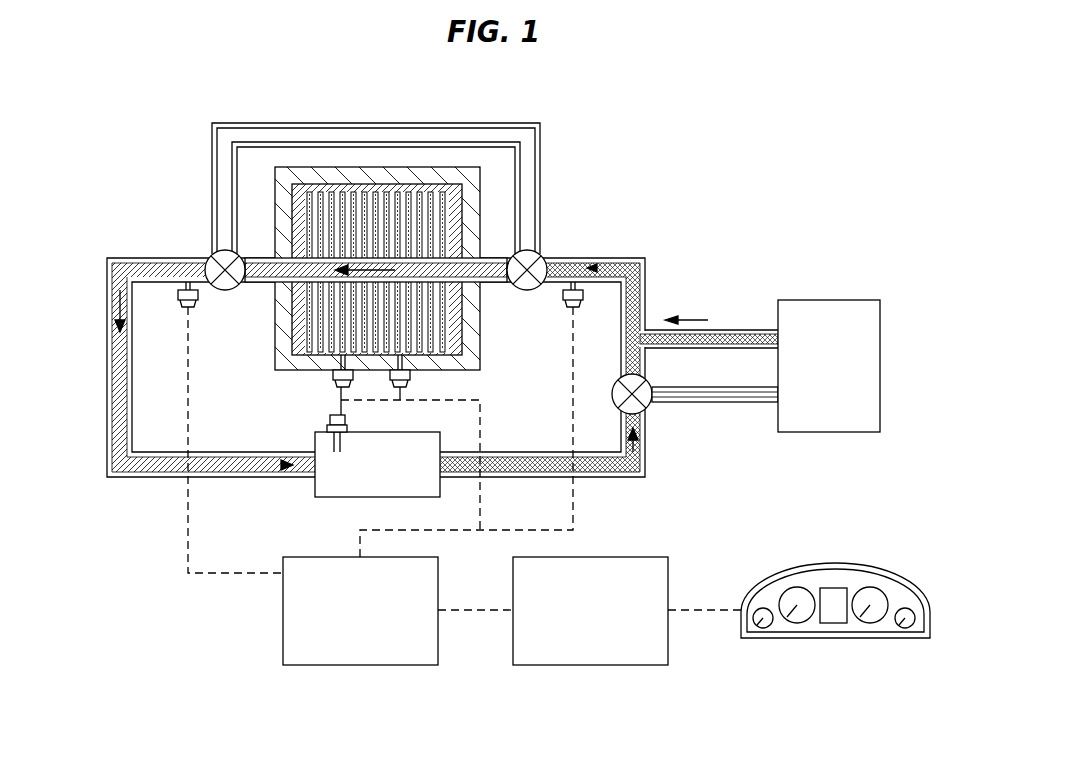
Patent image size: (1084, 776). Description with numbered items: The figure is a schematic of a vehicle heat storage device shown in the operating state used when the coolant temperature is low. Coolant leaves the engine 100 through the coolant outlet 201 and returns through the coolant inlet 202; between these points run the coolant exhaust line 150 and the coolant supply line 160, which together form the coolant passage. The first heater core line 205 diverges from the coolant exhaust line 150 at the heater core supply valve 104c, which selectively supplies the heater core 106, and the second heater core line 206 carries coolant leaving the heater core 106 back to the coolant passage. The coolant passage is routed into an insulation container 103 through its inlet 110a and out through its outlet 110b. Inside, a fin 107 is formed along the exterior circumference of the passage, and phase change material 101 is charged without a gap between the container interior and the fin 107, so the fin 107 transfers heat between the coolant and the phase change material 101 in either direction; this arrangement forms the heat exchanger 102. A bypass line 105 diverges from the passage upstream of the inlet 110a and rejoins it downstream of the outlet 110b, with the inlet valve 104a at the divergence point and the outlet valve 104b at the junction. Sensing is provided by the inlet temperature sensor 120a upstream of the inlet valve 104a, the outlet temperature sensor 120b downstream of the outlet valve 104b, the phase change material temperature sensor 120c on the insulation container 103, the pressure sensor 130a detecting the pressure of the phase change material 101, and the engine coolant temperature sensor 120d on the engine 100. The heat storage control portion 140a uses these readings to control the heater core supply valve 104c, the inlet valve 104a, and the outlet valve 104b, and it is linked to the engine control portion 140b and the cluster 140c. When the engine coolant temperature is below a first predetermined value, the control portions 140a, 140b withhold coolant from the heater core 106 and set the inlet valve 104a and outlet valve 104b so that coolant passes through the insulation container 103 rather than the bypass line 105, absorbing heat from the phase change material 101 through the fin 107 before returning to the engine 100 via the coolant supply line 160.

The engine 100 is at (372, 497).
The phase change material 101 is at (374, 227).
The heat exchanger 102 is at (466, 315).
The insulation container 103 is at (475, 362).
The inlet valve 104a is at (541, 256).
The outlet valve 104b is at (212, 256).
The heater core supply valve 104c is at (647, 408).
The bypass line 105 is at (326, 123).
The heater core 106 is at (829, 300).
The fin 107 is at (397, 184).
The inlet 110a is at (482, 257).
The outlet 110b is at (268, 257).
The inlet temperature sensor 120a is at (590, 293).
The outlet temperature sensor 120b is at (198, 300).
The phase change material temperature sensor 120c is at (333, 375).
The engine coolant temperature sensor 120d is at (328, 420).
The pressure sensor 130a is at (408, 374).
The heat storage control portion 140a is at (360, 665).
The engine control portion 140b is at (590, 665).
The cluster 140c is at (833, 638).
The coolant exhaust line 150 is at (636, 477).
The coolant supply line 160 is at (108, 463).
The coolant outlet 201 is at (448, 477).
The coolant inlet 202 is at (308, 477).
The first heater core line 205 is at (758, 402).
The second heater core line 206 is at (716, 330).